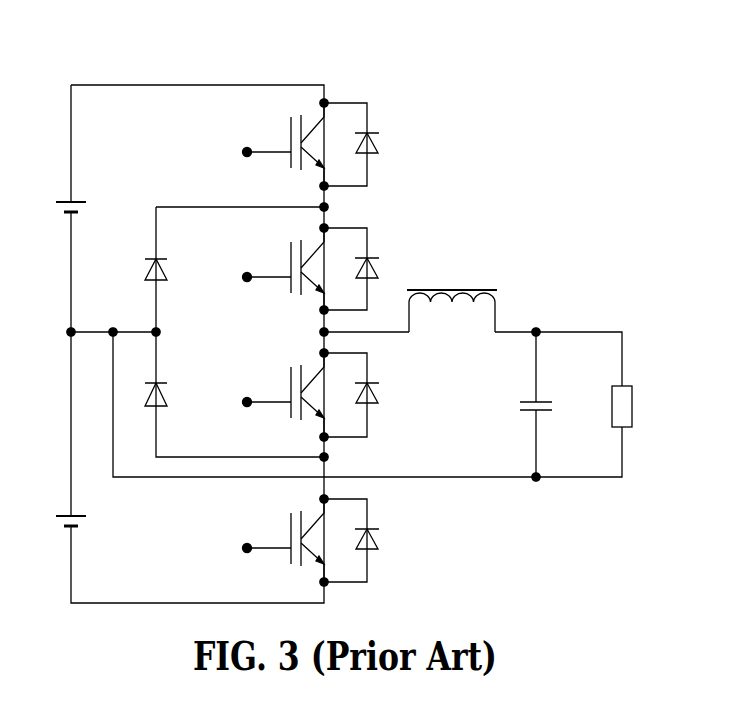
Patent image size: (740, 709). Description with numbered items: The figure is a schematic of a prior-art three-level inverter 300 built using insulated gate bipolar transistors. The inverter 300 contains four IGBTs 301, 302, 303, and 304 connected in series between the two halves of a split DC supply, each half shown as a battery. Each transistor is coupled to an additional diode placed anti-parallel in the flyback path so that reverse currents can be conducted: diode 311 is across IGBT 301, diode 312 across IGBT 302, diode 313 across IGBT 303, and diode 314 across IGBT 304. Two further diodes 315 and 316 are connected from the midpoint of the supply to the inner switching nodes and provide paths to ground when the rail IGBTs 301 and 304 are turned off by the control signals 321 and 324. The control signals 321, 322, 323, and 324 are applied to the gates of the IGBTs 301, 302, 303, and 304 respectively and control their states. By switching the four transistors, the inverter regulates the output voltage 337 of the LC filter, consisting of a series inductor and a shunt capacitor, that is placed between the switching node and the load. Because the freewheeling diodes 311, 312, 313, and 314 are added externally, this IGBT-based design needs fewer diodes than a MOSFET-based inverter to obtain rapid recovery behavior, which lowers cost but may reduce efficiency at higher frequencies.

The three-level inverter 300 is at (344, 344).
The IGBT 301 is at (292, 144).
The IGBT 302 is at (292, 269).
The IGBT 303 is at (292, 395).
The IGBT 304 is at (292, 540).
The diode 311 is at (367, 144).
The diode 312 is at (367, 269).
The diode 313 is at (367, 395).
The diode 314 is at (367, 540).
The diode 315 is at (168, 260).
The diode 316 is at (168, 383).
The control signal 321 is at (251, 151).
The control signal 322 is at (251, 278).
The control signal 323 is at (251, 400).
The control signal 324 is at (251, 547).
The output voltage 337 is at (542, 323).